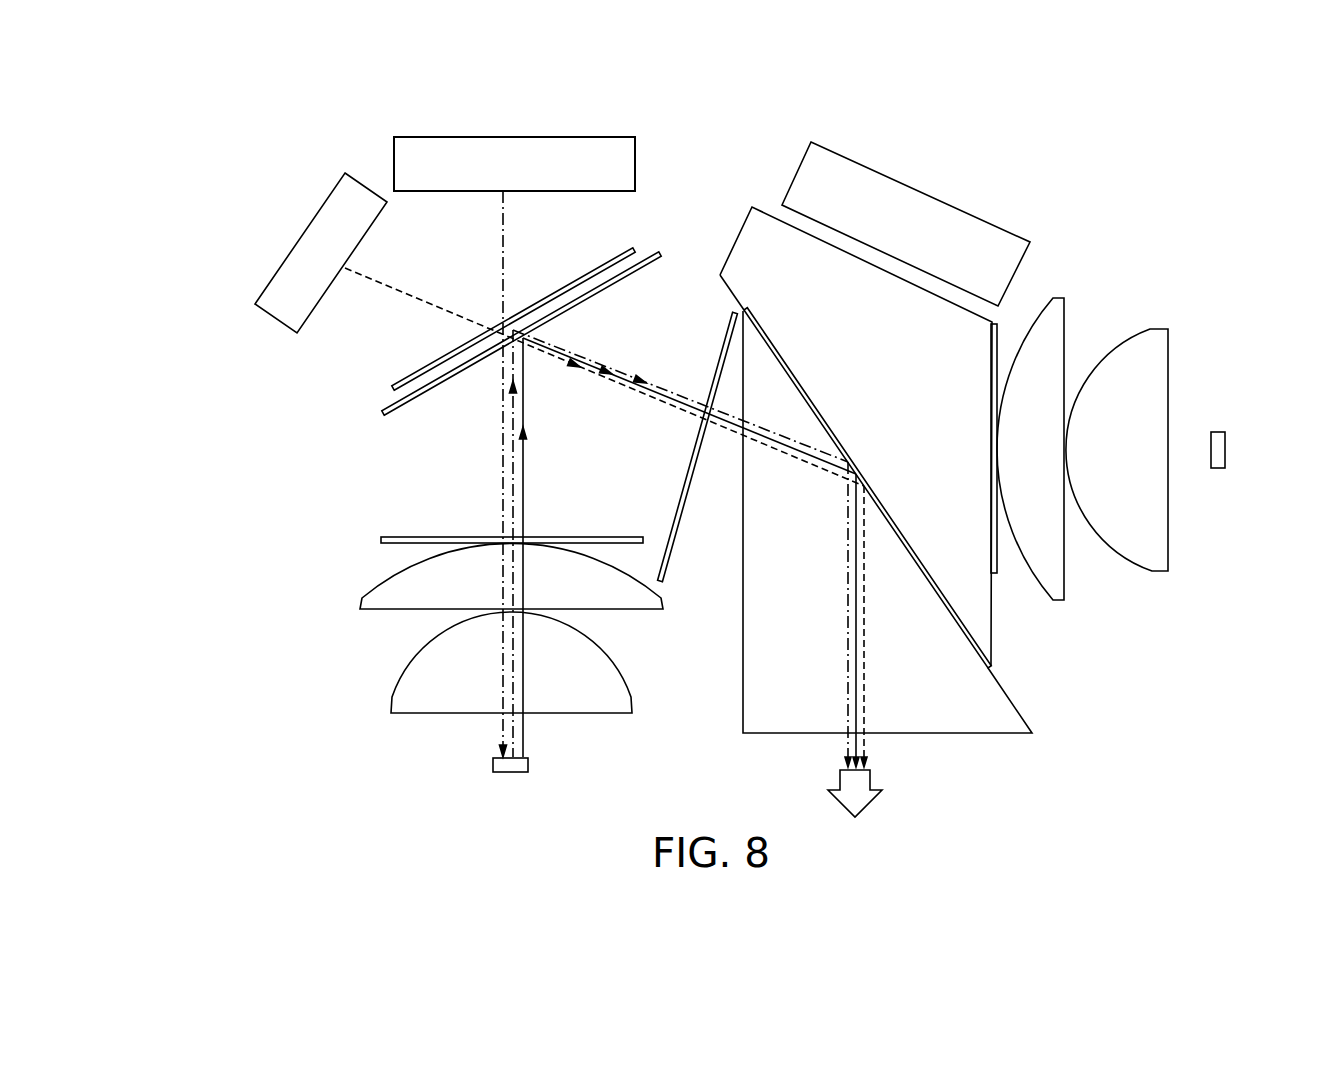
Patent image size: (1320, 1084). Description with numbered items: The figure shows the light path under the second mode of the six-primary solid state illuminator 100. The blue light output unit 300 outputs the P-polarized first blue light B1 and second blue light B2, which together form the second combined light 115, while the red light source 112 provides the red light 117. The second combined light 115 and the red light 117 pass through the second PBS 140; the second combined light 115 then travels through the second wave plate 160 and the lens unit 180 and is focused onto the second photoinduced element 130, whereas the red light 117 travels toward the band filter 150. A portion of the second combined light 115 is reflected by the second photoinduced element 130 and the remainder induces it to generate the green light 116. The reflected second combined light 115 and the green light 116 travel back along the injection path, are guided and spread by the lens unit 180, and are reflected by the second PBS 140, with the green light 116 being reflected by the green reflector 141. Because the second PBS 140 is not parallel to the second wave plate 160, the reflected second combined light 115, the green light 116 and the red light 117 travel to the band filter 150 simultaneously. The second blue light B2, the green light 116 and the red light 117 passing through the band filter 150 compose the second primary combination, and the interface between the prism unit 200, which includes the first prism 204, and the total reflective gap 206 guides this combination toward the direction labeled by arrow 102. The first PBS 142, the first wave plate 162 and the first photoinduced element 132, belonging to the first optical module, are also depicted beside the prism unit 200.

The six-primary solid state illuminator 100 is at (244, 124).
The arrow 102 is at (838, 779).
The red light source 112 is at (312, 238).
The second combined light 115 is at (506, 213).
The green light 116 is at (524, 737).
The red light 117 is at (376, 287).
The second photoinduced element 130 is at (494, 765).
The first photoinduced element 132 is at (1218, 431).
The second PBS 140 is at (392, 388).
The green reflector 141 is at (382, 413).
The first PBS 142 is at (947, 600).
The band filter 150 is at (697, 447).
The second wave plate 160 is at (381, 540).
The first wave plate 162 is at (1000, 324).
The lens unit 180 is at (354, 662).
The prism unit 200 is at (914, 505).
The first prism 204 is at (980, 636).
The total reflective gap 206 is at (961, 645).
The blue light output unit 300 is at (636, 165).